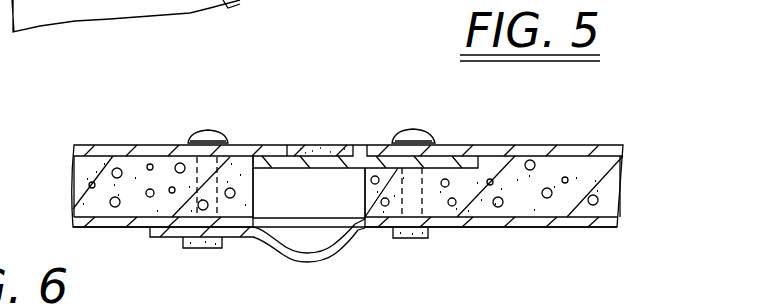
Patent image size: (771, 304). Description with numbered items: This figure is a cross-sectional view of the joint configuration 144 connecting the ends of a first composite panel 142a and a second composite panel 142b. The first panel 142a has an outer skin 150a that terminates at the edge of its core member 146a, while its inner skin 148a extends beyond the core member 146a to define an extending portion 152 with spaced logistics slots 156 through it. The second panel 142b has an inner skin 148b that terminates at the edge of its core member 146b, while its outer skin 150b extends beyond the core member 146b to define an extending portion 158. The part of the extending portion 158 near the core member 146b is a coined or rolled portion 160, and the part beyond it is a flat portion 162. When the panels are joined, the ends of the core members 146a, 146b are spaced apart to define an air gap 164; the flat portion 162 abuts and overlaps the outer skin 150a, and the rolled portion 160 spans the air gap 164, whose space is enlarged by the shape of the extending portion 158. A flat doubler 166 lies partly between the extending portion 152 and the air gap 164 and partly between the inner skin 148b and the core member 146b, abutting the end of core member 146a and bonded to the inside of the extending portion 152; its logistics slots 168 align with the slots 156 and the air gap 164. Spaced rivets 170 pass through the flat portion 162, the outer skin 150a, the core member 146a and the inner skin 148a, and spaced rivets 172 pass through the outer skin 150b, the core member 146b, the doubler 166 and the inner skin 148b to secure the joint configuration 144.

The joint configuration 144 is at (386, 101).
The inner skin 148a is at (102, 150).
The inner skin 148b is at (527, 150).
The core member 146a is at (108, 158).
The core member 146b is at (622, 167).
The first composite panel 142a is at (98, 200).
The second composite panel 142b is at (602, 184).
The outer skin 150a is at (107, 228).
The outer skin 150b is at (490, 226).
The extending portion 152 is at (266, 150).
The logistics slots 156 is at (331, 151).
The doubler 166 is at (374, 162).
The logistics slots 168 is at (293, 160).
The rivets 170 is at (203, 133).
The rivets 172 is at (408, 128).
The flat portion 162 is at (255, 234).
The extending portion 158 is at (295, 258).
The coined or rolled portion 160 is at (332, 256).
The air gap 164 is at (336, 201).